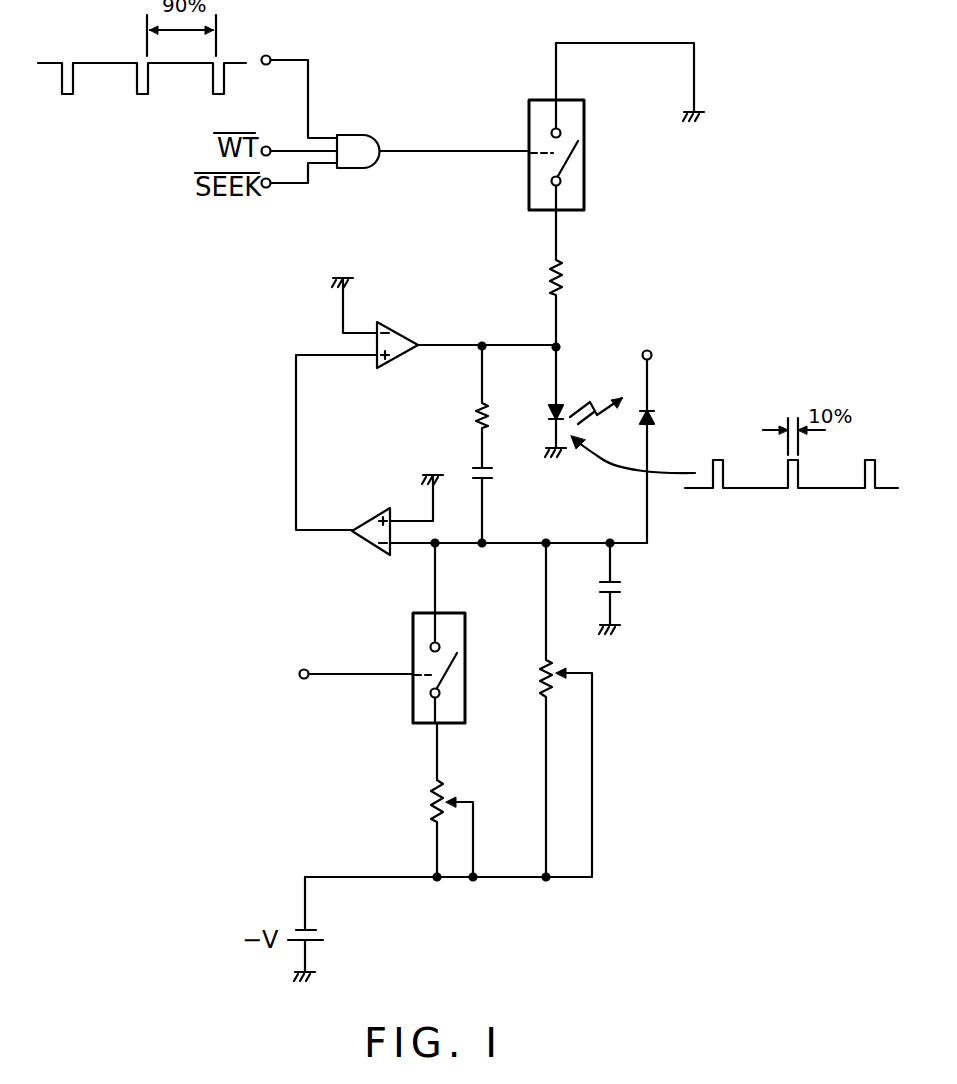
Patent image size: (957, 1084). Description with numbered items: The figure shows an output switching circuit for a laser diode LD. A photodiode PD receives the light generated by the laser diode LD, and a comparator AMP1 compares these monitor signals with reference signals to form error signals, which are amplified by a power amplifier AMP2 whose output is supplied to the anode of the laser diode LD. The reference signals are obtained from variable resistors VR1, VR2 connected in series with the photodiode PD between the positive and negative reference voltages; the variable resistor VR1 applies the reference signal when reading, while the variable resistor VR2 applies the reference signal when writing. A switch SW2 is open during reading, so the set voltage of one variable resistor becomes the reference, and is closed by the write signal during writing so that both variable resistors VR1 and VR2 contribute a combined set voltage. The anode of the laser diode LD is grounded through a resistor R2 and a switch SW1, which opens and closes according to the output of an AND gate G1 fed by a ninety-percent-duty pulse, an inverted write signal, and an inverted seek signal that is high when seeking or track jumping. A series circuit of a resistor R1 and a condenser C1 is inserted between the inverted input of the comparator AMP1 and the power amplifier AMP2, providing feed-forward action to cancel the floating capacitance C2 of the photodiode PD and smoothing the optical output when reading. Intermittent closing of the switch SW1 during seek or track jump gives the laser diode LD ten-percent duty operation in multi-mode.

The AND gate G1 is at (358, 137).
The switch SW1 is at (587, 126).
The switch SW2 is at (414, 633).
The resistor R1 is at (501, 407).
The resistor R2 is at (577, 278).
The condenser C1 is at (499, 502).
The floating capacitance C2 is at (630, 588).
The comparator AMP1 is at (488, 515).
The power amplifier AMP2 is at (426, 323).
The laser diode LD is at (583, 402).
The photodiode PD is at (665, 430).
The variable resistor VR1 is at (572, 710).
The variable resistor VR2 is at (464, 800).